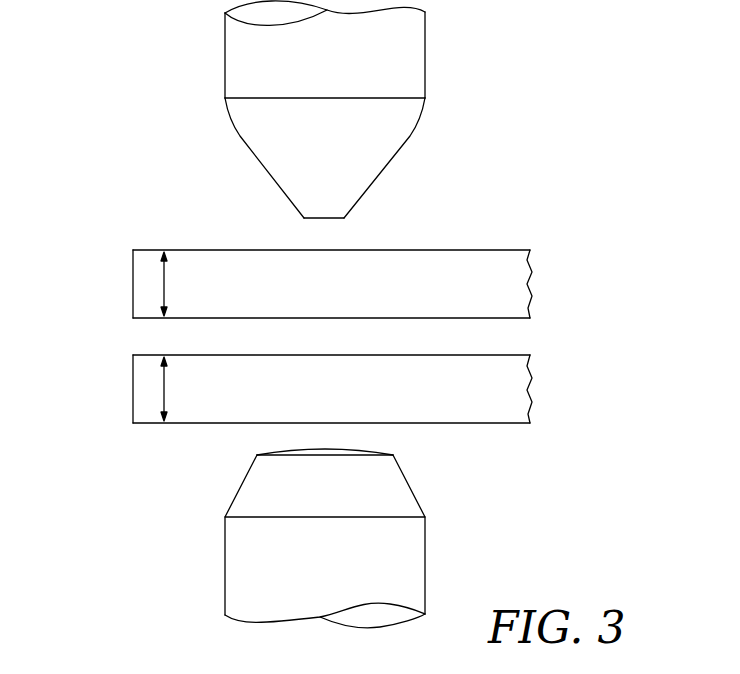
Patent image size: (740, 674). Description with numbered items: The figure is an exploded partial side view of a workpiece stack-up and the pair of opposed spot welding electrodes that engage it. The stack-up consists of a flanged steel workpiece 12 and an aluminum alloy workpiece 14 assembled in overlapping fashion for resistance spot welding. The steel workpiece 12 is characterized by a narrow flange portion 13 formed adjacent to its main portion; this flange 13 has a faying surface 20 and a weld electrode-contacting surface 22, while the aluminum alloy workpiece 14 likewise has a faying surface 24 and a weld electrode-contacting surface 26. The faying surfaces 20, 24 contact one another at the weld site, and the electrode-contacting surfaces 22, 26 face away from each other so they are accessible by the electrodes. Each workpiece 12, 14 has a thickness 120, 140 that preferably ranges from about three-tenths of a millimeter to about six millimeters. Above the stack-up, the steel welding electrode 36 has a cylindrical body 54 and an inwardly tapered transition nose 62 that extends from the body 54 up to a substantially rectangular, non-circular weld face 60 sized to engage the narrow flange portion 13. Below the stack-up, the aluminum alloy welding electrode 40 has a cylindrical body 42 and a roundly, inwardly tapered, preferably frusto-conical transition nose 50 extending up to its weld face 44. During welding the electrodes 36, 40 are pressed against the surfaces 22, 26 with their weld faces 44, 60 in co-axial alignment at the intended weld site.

The steel workpiece 12 is at (342, 268).
The narrow flange portion 13 is at (341, 319).
The aluminum alloy workpiece 14 is at (329, 405).
The faying surface 20 is at (518, 318).
The weld electrode-contacting surface 22 is at (485, 250).
The faying surface 24 is at (470, 355).
The weld electrode-contacting surface 26 is at (472, 423).
The steel welding electrode 36 is at (337, 121).
The aluminum alloy welding electrode 40 is at (332, 531).
The body 42 is at (248, 563).
The weld face 44 is at (287, 452).
The transition nose 50 is at (388, 487).
The body 54 is at (242, 65).
The weld face 60 is at (325, 220).
The transition nose 62 is at (257, 155).
The thickness 120 is at (164, 283).
The thickness 140 is at (164, 389).